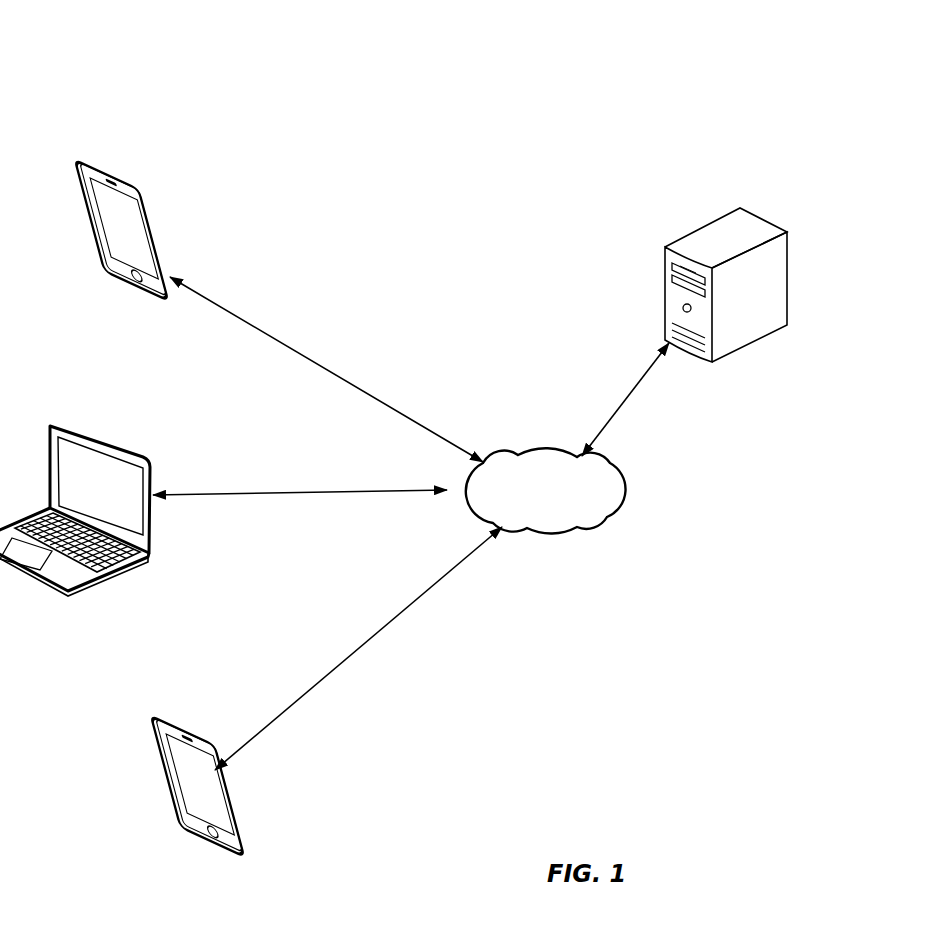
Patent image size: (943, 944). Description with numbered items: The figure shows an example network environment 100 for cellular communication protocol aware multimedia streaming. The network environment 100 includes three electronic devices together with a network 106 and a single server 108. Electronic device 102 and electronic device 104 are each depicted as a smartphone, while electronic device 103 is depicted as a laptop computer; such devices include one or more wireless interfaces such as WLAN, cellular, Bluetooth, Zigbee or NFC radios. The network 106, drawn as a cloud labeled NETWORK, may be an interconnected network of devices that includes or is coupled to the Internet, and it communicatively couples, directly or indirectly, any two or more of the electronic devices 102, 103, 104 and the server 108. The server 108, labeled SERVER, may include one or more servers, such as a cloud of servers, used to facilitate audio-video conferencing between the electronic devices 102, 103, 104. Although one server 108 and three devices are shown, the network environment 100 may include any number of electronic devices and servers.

The network environment 100 is at (145, 82).
The electronic device 102 is at (190, 843).
The electronic device 103 is at (67, 593).
The electronic device 104 is at (132, 290).
The network 106 is at (573, 527).
The server 108 is at (676, 240).